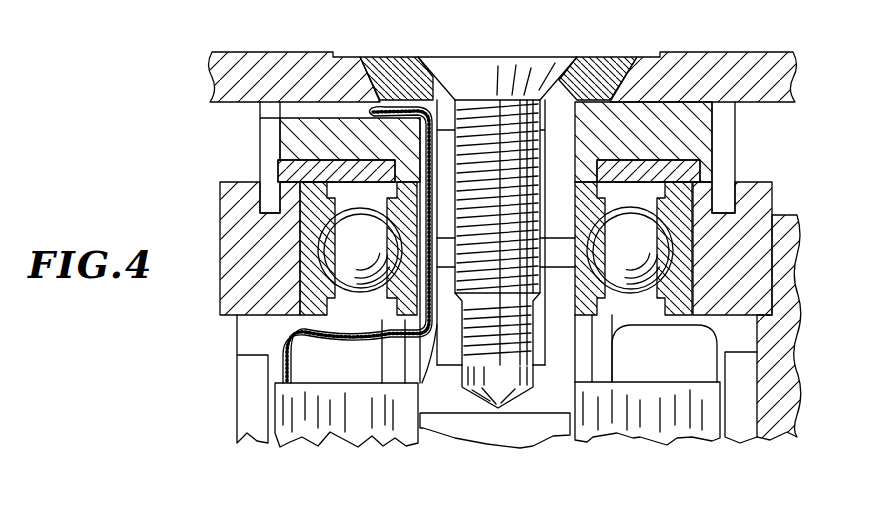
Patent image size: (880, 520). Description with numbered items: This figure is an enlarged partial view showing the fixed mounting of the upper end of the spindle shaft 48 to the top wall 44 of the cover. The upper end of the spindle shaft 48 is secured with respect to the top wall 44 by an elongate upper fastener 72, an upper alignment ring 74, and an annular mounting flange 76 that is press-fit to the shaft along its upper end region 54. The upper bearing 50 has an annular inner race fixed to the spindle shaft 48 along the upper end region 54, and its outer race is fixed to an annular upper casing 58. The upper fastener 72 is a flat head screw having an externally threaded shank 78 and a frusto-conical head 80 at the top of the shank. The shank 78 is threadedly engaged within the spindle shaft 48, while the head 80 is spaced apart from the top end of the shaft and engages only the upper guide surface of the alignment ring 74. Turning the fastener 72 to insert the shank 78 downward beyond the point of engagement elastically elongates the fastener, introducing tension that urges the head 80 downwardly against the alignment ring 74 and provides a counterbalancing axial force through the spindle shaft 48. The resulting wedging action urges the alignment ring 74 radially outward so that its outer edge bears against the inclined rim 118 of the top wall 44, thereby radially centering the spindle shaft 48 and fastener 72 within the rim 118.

The top wall 44 is at (280, 62).
The inclined rim 118 is at (357, 60).
The upper fastener 72 is at (497, 210).
The frusto-conical head 80 is at (540, 70).
The upper alignment ring 74 is at (603, 72).
The annular mounting flange 76 is at (282, 138).
The externally threaded shank 78 is at (518, 193).
The upper bearing 50 is at (367, 247).
The upper end region 54 is at (558, 228).
The upper casing 58 is at (758, 208).
The spindle shaft 48 is at (532, 453).